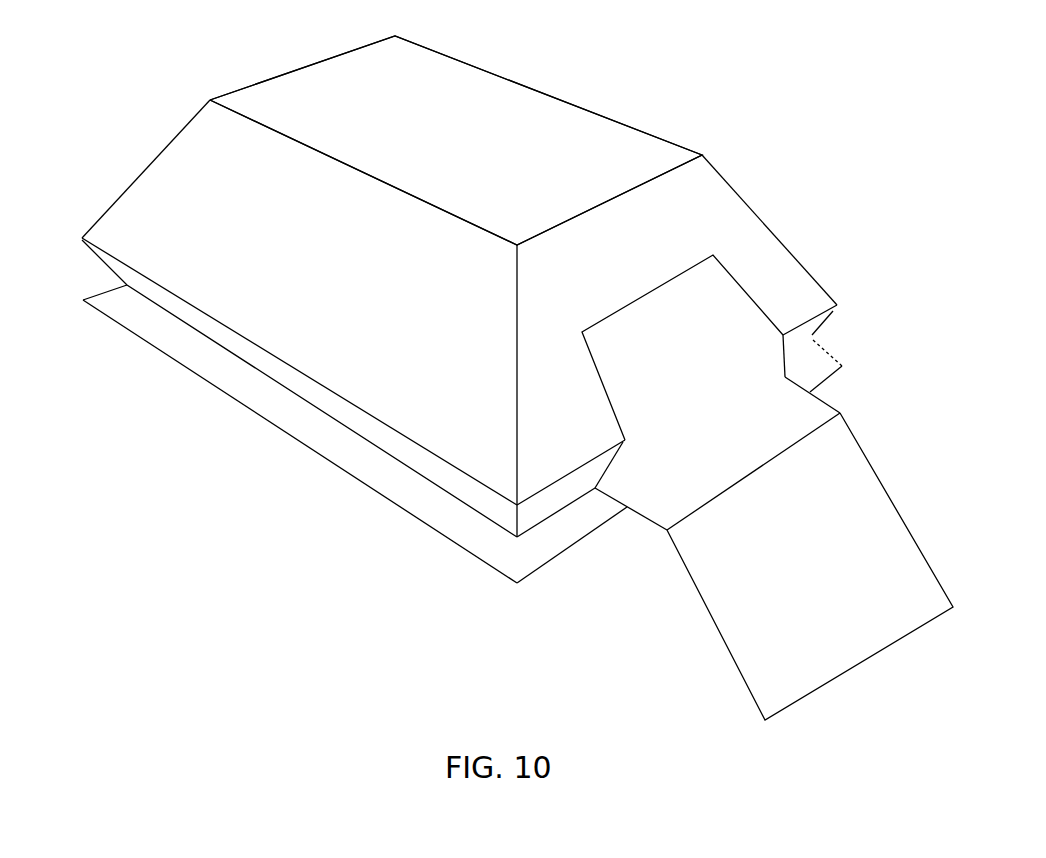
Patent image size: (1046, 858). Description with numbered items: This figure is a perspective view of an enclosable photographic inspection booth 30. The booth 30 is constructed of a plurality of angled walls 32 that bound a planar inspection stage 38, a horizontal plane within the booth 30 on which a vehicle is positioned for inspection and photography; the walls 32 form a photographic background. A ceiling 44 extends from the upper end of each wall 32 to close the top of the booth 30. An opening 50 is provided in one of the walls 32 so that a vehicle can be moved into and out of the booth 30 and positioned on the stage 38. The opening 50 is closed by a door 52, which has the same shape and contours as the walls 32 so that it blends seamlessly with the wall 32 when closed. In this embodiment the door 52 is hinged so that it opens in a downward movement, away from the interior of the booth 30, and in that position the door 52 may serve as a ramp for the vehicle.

The enclosable photographic inspection booth 30 is at (160, 91).
The angled walls 32 is at (117, 243).
The ceiling 44 is at (555, 117).
The opening 50 is at (613, 417).
The planar stage 38 is at (618, 467).
The door 52 is at (752, 595).